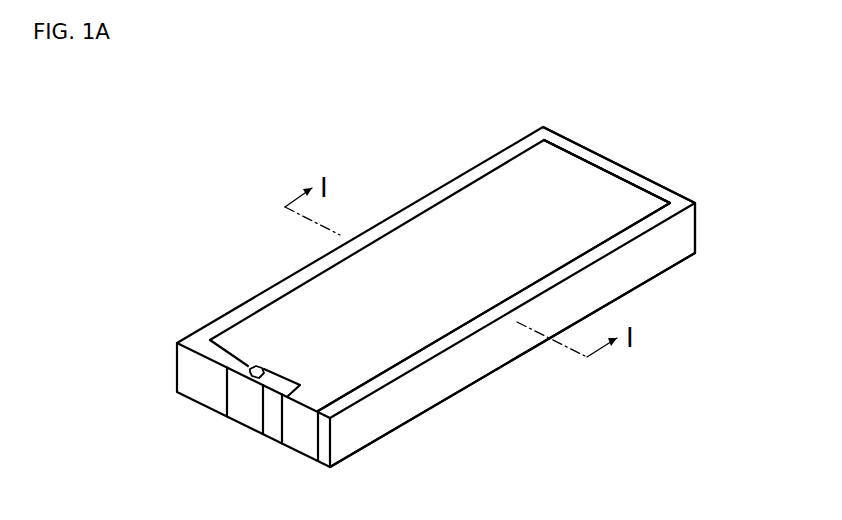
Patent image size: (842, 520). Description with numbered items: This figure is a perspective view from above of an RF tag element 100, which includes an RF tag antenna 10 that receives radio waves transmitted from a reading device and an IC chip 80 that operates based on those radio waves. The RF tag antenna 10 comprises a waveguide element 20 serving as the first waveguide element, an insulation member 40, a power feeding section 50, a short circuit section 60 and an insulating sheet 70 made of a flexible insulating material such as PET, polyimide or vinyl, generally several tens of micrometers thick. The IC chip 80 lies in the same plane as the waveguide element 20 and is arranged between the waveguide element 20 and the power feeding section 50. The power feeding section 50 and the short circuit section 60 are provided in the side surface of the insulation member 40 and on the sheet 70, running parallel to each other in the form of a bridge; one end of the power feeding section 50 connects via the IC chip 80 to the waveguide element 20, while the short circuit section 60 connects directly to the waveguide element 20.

The RF tag element 100 is at (423, 190).
The insulating sheet 70 is at (515, 150).
The RF tag antenna 10 is at (563, 170).
The waveguide element 20 is at (617, 195).
The insulation member 40 is at (690, 232).
The power feeding section 50 is at (245, 408).
The short circuit section 60 is at (303, 437).
The IC chip 80 is at (252, 365).